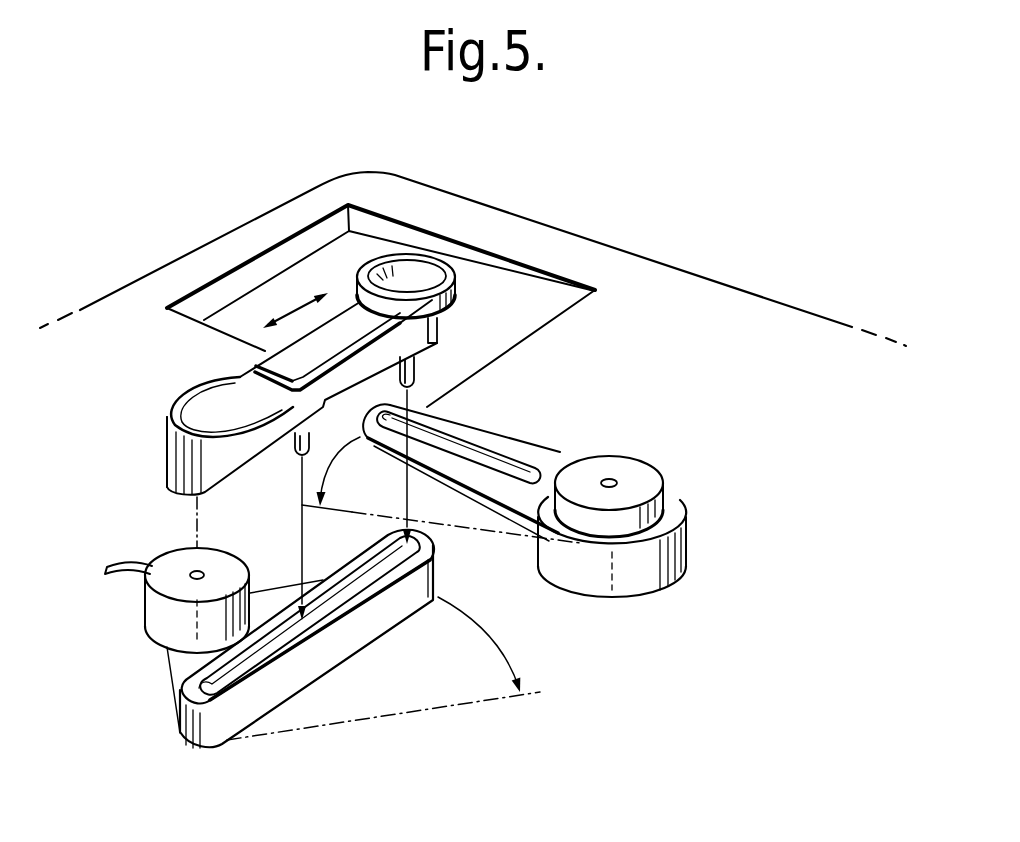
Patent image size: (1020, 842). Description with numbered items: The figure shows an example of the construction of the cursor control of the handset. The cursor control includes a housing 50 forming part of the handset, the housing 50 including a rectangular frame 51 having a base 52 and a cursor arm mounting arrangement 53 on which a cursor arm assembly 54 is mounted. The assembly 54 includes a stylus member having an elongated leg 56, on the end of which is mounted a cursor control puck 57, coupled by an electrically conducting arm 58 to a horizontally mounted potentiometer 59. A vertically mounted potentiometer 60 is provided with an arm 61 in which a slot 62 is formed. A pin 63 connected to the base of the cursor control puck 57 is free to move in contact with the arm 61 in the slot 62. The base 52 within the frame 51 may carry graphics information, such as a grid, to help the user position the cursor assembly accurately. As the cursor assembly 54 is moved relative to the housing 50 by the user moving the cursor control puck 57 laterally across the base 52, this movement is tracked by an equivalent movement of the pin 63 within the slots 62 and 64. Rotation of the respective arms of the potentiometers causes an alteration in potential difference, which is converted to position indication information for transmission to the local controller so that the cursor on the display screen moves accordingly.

The housing 50 is at (236, 248).
The rectangular frame 51 is at (310, 240).
The base 52 is at (245, 312).
The cursor arm mounting arrangement 53 is at (158, 452).
The cursor arm assembly 54 is at (468, 300).
The elongated leg 56 is at (347, 380).
The cursor control puck 57 is at (418, 270).
The electrically conducting arm 58 is at (293, 362).
The horizontally mounted potentiometer 59 is at (190, 562).
The vertically mounted potentiometer 60 is at (645, 483).
The arm 61 is at (523, 505).
The slot 62 is at (488, 458).
The pin 63 is at (425, 352).
The slot 64 is at (350, 587).